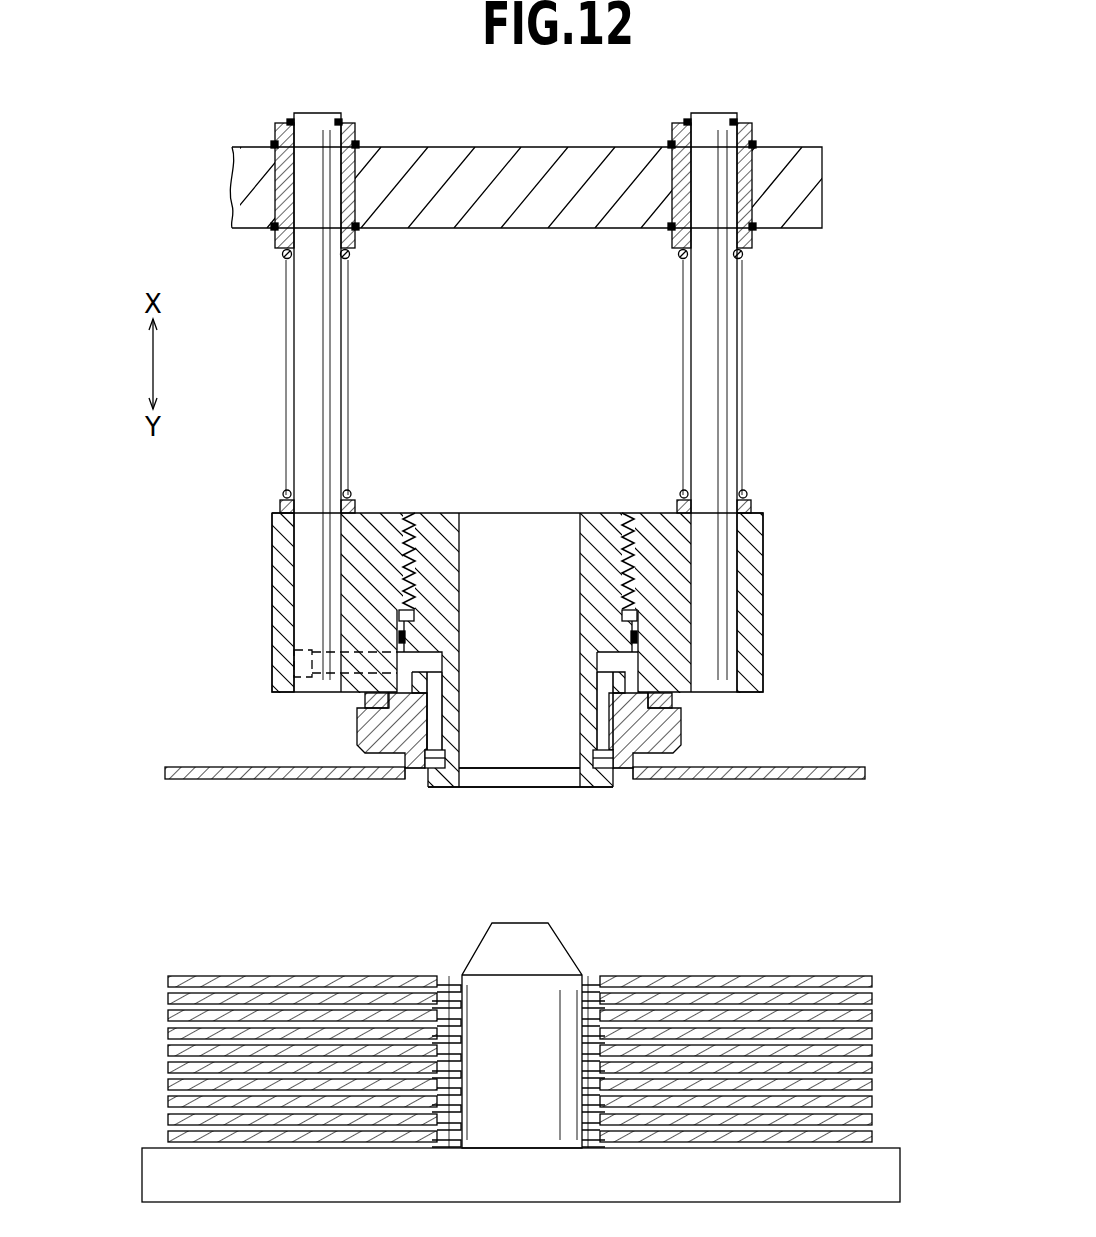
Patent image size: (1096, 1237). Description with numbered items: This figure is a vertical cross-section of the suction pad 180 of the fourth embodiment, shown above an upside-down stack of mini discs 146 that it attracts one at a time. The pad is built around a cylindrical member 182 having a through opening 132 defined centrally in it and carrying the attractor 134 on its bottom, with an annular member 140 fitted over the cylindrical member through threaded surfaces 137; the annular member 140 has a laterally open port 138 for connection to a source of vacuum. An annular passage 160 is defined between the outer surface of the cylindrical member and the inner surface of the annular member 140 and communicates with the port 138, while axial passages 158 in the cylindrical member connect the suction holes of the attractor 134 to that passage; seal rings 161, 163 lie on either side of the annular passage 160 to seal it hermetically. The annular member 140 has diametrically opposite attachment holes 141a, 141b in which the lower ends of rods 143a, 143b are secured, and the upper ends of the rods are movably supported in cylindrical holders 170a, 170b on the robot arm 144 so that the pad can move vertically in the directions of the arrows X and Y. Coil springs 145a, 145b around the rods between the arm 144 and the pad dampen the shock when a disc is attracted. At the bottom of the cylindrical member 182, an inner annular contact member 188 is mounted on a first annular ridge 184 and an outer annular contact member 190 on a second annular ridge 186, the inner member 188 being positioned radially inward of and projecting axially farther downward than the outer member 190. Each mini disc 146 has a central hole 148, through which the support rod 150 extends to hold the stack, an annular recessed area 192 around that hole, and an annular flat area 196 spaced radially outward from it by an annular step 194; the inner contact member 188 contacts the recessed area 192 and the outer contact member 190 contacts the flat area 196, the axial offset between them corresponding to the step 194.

The through opening 132 is at (470, 560).
The attractor 134 is at (644, 758).
The threaded surfaces 137 is at (410, 516).
The port 138 is at (294, 653).
The annular member 140 is at (275, 592).
The attachment hole 141a is at (304, 562).
The attachment hole 141b is at (718, 578).
The rod 143a is at (318, 362).
The rod 143b is at (714, 358).
The robot arm 144 is at (806, 161).
The coil spring 145a is at (284, 258).
The coil spring 145b is at (741, 258).
The mini disc 146 is at (850, 767).
The central hole 148 is at (575, 788).
The support rod 150 is at (555, 946).
The axial passage 158 is at (424, 736).
The annular passage 160 is at (396, 680).
The seal ring 161 is at (662, 701).
The seal ring 163 is at (638, 636).
The cylindrical holder 170a is at (352, 165).
The cylindrical holder 170b is at (742, 172).
The suction pad 180 is at (510, 591).
The cylindrical member 182 is at (668, 738).
The first annular ridge 184 is at (480, 788).
The second annular ridge 186 is at (432, 768).
The inner annular contact member 188 is at (606, 770).
The outer annular contact member 190 is at (636, 776).
The annular recessed area 192 is at (602, 984).
The annular step 194 is at (446, 984).
The annular flat area 196 is at (416, 974).